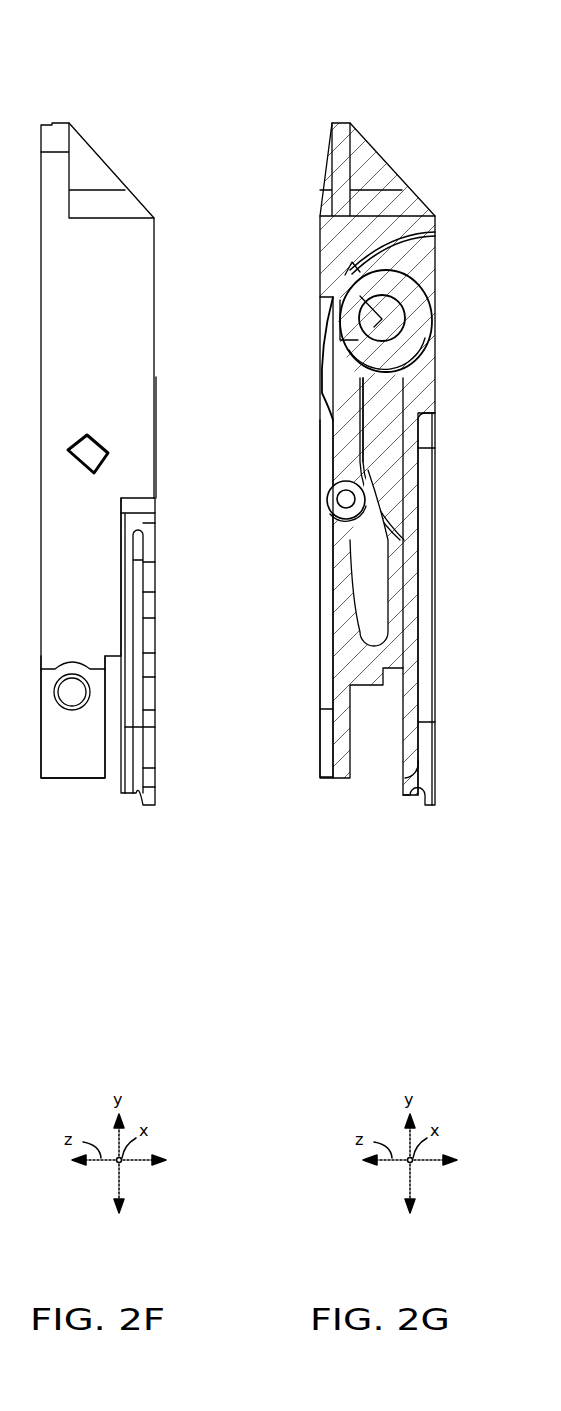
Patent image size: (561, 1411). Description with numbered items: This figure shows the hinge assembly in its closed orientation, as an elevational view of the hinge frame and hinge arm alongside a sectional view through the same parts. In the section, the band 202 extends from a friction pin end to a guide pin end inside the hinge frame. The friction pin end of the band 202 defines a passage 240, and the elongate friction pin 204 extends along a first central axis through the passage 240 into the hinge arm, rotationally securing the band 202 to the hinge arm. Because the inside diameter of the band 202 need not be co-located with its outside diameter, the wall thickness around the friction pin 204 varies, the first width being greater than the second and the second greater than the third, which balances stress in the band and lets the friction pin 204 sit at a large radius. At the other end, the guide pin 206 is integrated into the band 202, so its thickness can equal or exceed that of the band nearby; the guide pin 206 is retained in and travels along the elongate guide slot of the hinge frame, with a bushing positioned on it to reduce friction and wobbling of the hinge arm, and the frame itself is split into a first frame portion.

The passage 240 is at (434, 277).
The band 202 is at (440, 335).
The friction pin 204 is at (370, 330).
The guide pin 206 is at (336, 500).